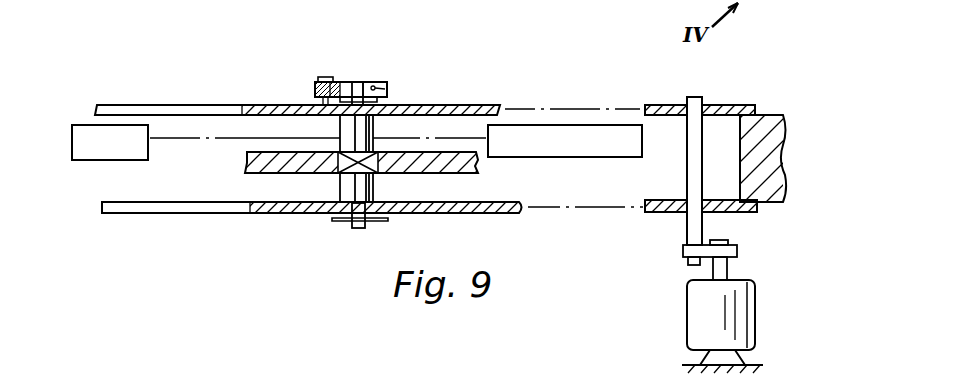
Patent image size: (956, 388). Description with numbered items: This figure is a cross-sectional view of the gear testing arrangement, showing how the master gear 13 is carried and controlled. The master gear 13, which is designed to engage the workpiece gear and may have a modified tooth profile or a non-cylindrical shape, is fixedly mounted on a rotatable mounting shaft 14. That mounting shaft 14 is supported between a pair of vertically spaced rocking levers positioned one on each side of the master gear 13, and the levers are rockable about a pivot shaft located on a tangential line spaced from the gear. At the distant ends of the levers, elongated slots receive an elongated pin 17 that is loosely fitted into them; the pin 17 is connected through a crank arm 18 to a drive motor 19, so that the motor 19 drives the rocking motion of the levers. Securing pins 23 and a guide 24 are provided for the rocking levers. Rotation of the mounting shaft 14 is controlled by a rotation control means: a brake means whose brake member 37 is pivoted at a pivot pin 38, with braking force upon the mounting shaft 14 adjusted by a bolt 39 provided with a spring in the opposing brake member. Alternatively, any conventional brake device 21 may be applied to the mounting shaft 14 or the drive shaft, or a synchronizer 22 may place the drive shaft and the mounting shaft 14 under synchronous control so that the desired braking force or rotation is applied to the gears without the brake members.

The master gear 13 is at (245, 158).
The mounting shaft 14 is at (358, 82).
The elongated pin 17 is at (690, 97).
The crank arm 18 is at (683, 250).
The drive motor 19 is at (690, 315).
The brake device 21 is at (120, 161).
The synchronizer 22 is at (587, 158).
The securing pins 23 is at (333, 221).
The guide 24 is at (772, 115).
The brake member 37 is at (341, 82).
The pivot pin 38 is at (324, 78).
The bolt 39 is at (388, 88).